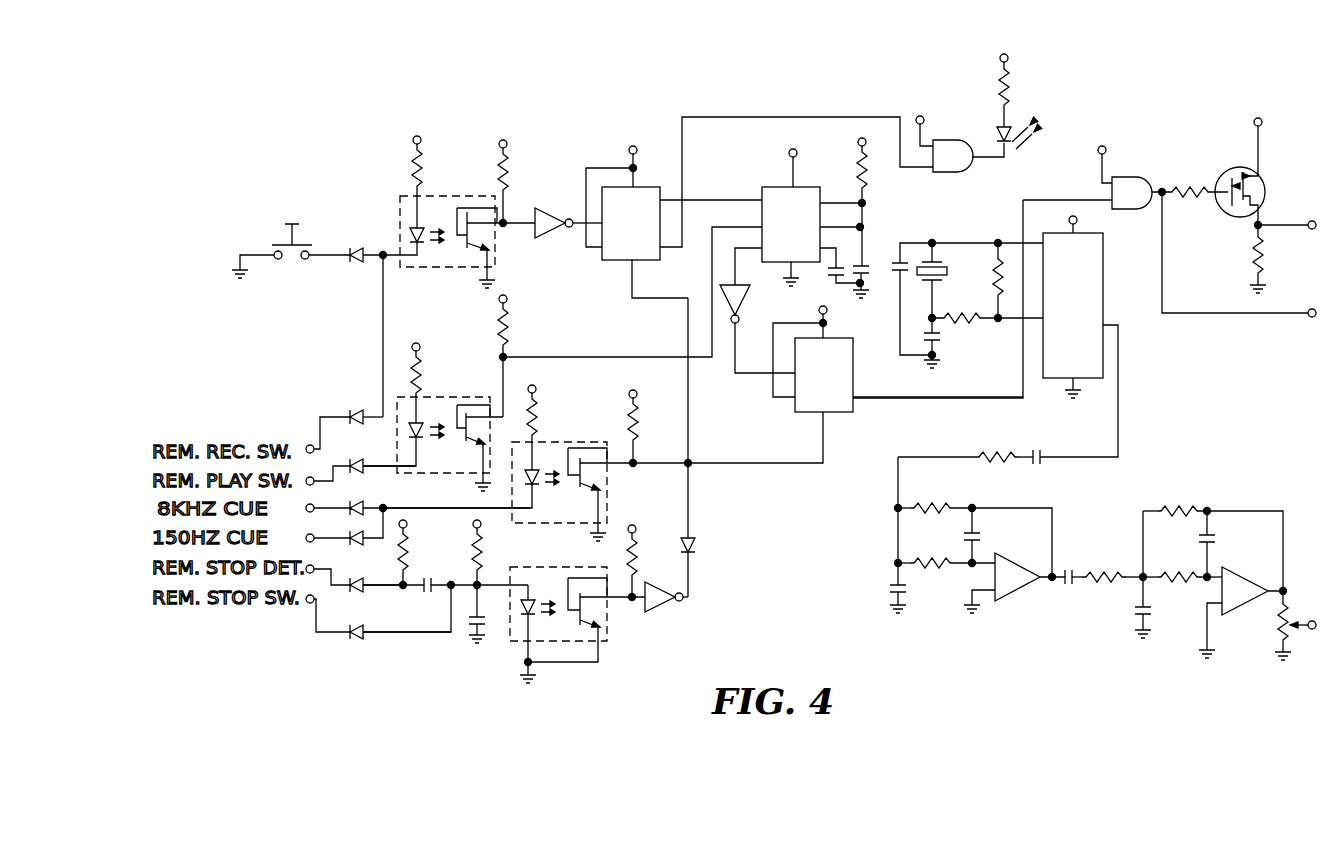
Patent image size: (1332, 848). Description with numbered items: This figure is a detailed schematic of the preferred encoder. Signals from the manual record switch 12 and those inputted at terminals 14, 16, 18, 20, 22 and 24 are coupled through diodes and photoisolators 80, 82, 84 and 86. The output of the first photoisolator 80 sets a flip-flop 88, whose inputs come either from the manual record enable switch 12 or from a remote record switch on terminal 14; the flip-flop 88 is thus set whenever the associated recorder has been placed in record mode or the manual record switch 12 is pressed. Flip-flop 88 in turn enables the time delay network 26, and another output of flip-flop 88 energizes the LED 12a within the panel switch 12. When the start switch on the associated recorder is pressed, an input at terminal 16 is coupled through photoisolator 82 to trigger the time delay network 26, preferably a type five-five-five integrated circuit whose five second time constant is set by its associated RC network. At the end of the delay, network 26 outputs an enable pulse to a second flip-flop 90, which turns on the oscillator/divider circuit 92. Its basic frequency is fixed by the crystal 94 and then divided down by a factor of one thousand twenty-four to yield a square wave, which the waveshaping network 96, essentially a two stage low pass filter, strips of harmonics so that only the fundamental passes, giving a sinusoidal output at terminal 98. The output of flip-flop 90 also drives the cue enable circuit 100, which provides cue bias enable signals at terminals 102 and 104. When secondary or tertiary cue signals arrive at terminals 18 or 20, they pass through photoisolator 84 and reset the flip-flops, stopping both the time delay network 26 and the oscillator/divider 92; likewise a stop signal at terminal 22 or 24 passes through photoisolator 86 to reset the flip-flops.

The manual record switch 12 is at (285, 243).
The LED 12a is at (1012, 128).
The terminal 14 is at (307, 445).
The terminal 16 is at (315, 477).
The terminal 18 is at (315, 506).
The terminal 20 is at (314, 535).
The terminal 22 is at (315, 567).
The terminal 24 is at (306, 604).
The time delay network 26 is at (765, 192).
The photoisolator 80 is at (448, 196).
The photoisolator 82 is at (445, 397).
The photoisolator 84 is at (567, 442).
The photoisolator 86 is at (510, 643).
The flip-flop 88 is at (648, 187).
The flip-flop 90 is at (798, 414).
The oscillator/divider circuit 92 is at (1103, 258).
The crystal 94 is at (940, 262).
The waveshaping network 96 is at (1018, 592).
The terminal 98 is at (1311, 630).
The cue enable circuit 100 is at (1232, 168).
The terminal 102 is at (1311, 318).
The terminal 104 is at (1311, 221).